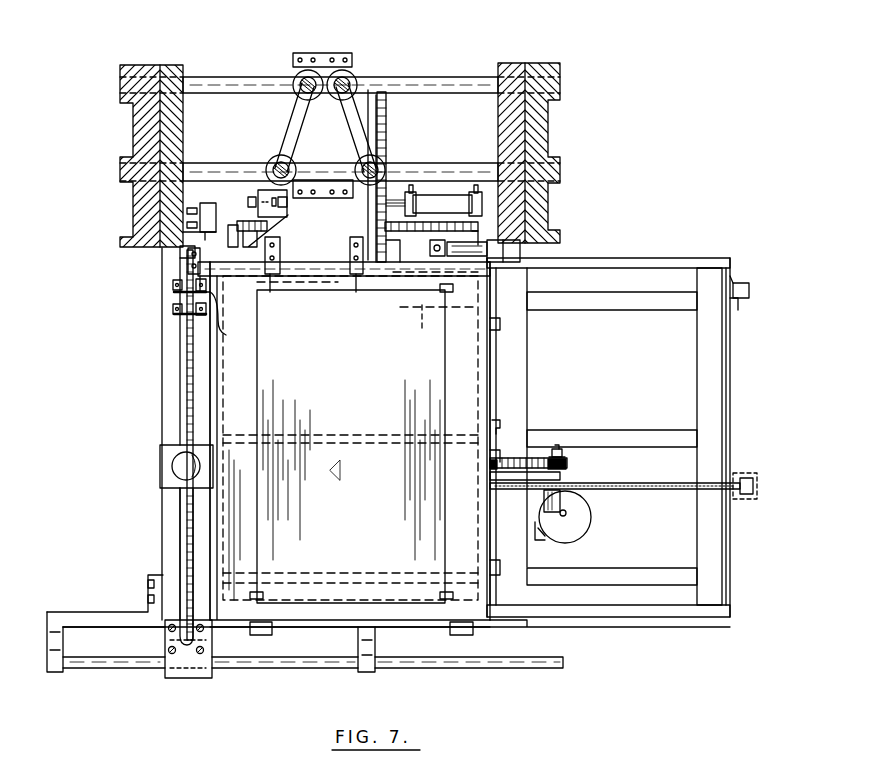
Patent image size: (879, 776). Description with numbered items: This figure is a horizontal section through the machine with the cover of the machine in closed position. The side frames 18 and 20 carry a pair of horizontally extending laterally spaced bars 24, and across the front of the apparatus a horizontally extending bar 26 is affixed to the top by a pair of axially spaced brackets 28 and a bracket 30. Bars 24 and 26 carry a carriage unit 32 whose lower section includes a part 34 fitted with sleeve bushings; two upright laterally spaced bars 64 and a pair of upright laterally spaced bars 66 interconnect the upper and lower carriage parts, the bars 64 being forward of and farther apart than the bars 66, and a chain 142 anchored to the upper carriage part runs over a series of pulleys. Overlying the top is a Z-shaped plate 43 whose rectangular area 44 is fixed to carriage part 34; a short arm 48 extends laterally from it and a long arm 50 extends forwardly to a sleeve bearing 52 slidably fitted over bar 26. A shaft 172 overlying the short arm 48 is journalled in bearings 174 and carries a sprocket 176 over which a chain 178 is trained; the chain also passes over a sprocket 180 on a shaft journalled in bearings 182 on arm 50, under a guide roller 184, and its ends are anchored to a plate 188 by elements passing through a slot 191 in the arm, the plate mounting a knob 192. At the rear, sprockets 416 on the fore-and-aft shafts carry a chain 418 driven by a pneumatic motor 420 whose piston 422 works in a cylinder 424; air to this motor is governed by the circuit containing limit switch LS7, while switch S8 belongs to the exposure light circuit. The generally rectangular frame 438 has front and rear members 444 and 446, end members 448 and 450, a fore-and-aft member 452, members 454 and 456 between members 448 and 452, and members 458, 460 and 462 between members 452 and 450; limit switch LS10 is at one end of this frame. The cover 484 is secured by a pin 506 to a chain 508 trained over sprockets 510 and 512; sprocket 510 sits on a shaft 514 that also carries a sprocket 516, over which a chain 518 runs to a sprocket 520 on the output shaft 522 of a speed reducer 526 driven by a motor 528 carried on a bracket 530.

The side frame 18 is at (131, 131).
The side frame 20 is at (545, 131).
The bars 24 is at (440, 78).
The carriage unit 32 is at (270, 112).
The bars 66 is at (300, 74).
The bars 64 is at (276, 166).
The carriage part 34 is at (362, 116).
The piston 422 is at (400, 208).
The cylinder 424 is at (478, 204).
The pneumatic motor 420 is at (426, 184).
The SP switch S8 is at (470, 252).
The Z-shaped plate 43 is at (257, 218).
The chain 418 is at (277, 219).
The sprockets 416 is at (232, 222).
The SP limit switch LS7 is at (186, 212).
The shaft 172 is at (328, 276).
The bearings 174 is at (186, 266).
The sprocket 176 is at (185, 250).
The arm 50 is at (172, 380).
The chain 178 is at (186, 408).
The bearings 182 is at (174, 284).
The sprocket 180 is at (174, 294).
The guide roller 184 is at (174, 315).
The knob 192 is at (176, 465).
The plate 188 is at (162, 483).
The slot 191 is at (180, 518).
The bracket 30 is at (108, 612).
The brackets 28 is at (55, 672).
The sleeve bearing 52 is at (186, 678).
The bar 26 is at (250, 668).
The short arm 48 is at (232, 296).
The rectangular area 44 is at (330, 278).
The frame member 448 is at (232, 402).
The frame member 452 is at (488, 374).
The frame member 454 is at (350, 576).
The cover 484 is at (342, 604).
The chain 142 is at (440, 288).
The frame member 456 is at (416, 326).
The frame 438 is at (626, 626).
The frame member 446 is at (664, 268).
The frame member 450 is at (718, 400).
The frame member 460 is at (620, 308).
The frame member 462 is at (646, 440).
The frame member 458 is at (626, 584).
The frame member 444 is at (540, 612).
The limit switch LS10 is at (742, 282).
The pin 506 is at (502, 498).
The sprocket 516 is at (504, 416).
The shaft 514 is at (508, 460).
The chain 518 is at (555, 458).
The sprocket 510 is at (492, 484).
The output shaft 522 is at (566, 457).
The sprocket 520 is at (568, 478).
The chain 508 is at (654, 489).
The sprocket 512 is at (752, 478).
The speed reducer 526 is at (562, 500).
The motor 528 is at (585, 524).
The bracket 530 is at (546, 540).